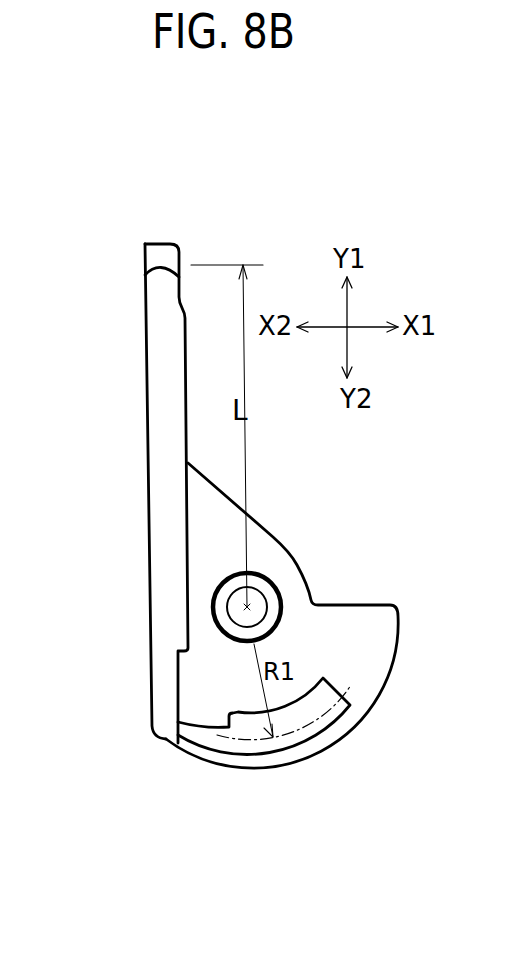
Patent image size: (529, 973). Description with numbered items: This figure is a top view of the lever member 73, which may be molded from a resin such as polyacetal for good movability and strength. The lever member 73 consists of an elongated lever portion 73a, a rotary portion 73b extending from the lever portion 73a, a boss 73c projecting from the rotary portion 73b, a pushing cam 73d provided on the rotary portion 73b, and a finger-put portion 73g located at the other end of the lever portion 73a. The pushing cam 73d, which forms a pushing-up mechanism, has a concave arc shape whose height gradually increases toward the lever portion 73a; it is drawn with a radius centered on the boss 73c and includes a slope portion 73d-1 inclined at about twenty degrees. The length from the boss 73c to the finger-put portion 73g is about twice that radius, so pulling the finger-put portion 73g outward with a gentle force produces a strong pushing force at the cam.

The lever member 73 is at (282, 164).
The lever portion 73a is at (147, 422).
The rotary portion 73b is at (293, 558).
The boss 73c is at (258, 572).
The pushing cam 73d is at (230, 745).
The slope portion 73d-1 is at (287, 740).
The finger-put portion 73g is at (179, 249).